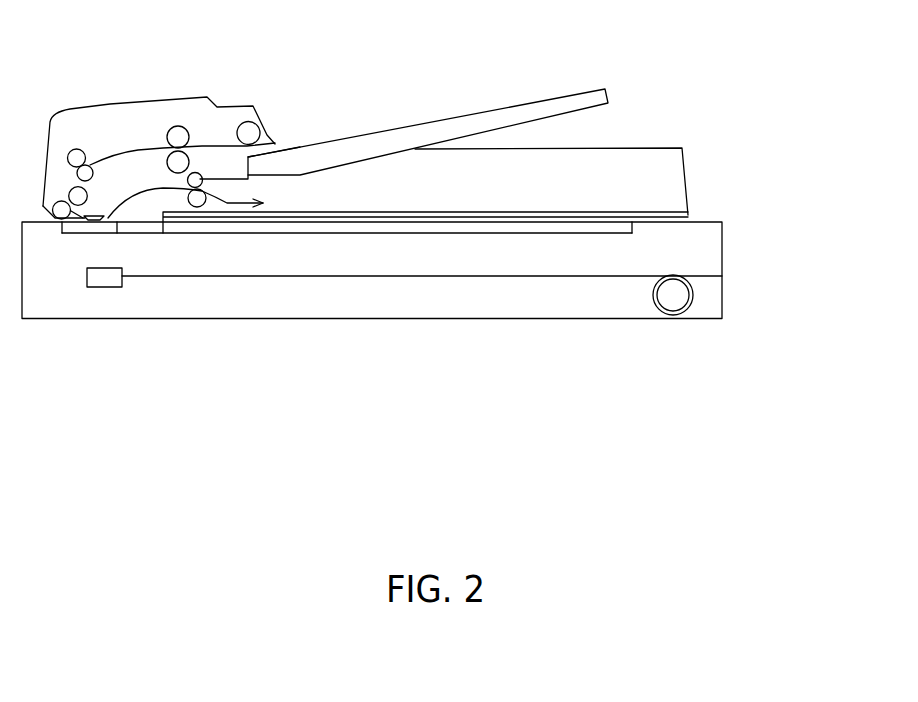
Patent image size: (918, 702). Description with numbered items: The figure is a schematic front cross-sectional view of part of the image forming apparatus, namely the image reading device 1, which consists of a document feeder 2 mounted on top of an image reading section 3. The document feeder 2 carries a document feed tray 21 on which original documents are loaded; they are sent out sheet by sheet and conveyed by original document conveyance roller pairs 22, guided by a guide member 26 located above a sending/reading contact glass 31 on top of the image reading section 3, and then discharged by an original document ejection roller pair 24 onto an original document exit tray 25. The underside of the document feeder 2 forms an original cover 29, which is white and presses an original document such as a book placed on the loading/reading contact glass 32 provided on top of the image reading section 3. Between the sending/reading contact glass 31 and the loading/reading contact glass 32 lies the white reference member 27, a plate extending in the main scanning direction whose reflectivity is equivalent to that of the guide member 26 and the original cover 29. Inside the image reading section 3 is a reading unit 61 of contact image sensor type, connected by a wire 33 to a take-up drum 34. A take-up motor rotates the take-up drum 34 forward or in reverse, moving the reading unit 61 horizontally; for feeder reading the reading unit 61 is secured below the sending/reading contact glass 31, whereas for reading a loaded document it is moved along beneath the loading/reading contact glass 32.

The image reading device 1 is at (795, 177).
The document feeder 2 is at (694, 178).
The image reading section 3 is at (730, 265).
The document feed tray 21 is at (504, 113).
The original document conveyance roller pairs 22 is at (78, 192).
The original document ejection roller pair 24 is at (197, 195).
The original document exit tray 25 is at (337, 212).
The guide member 26 is at (99, 216).
The white reference member 27 is at (132, 233).
The original cover 29 is at (590, 218).
The sending/reading contact glass 31 is at (77, 227).
The loading/reading contact glass 32 is at (448, 227).
The wire 33 is at (498, 279).
The take-up drum 34 is at (673, 306).
The reading unit 61 is at (105, 277).